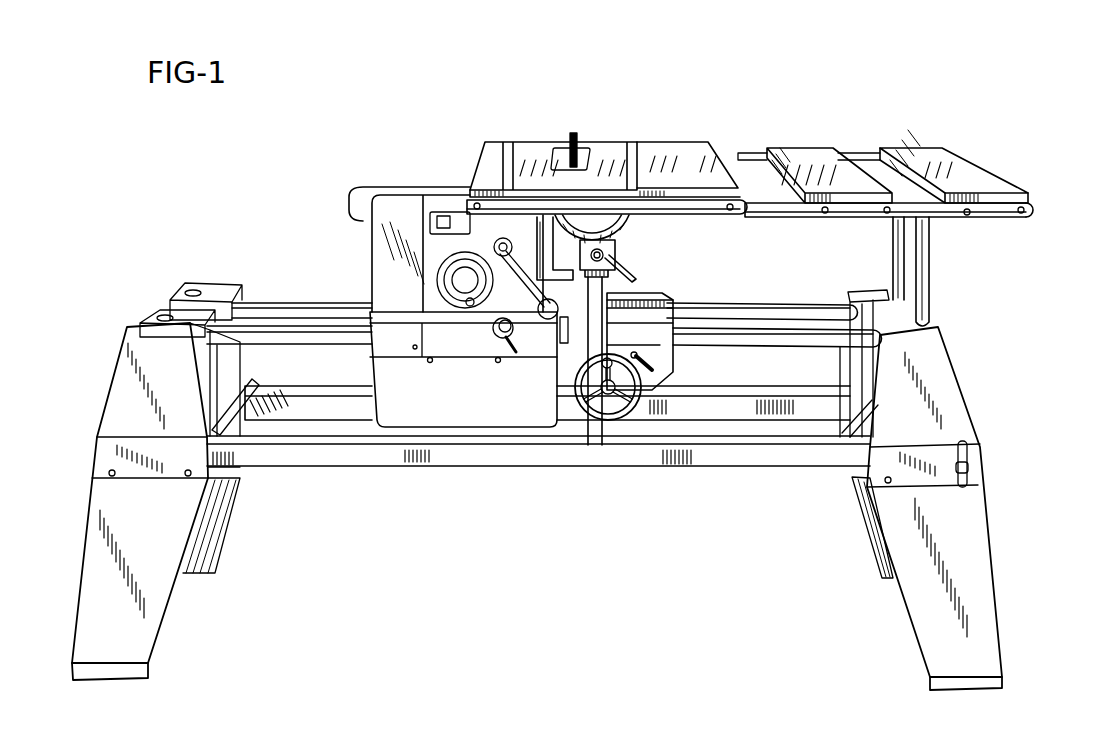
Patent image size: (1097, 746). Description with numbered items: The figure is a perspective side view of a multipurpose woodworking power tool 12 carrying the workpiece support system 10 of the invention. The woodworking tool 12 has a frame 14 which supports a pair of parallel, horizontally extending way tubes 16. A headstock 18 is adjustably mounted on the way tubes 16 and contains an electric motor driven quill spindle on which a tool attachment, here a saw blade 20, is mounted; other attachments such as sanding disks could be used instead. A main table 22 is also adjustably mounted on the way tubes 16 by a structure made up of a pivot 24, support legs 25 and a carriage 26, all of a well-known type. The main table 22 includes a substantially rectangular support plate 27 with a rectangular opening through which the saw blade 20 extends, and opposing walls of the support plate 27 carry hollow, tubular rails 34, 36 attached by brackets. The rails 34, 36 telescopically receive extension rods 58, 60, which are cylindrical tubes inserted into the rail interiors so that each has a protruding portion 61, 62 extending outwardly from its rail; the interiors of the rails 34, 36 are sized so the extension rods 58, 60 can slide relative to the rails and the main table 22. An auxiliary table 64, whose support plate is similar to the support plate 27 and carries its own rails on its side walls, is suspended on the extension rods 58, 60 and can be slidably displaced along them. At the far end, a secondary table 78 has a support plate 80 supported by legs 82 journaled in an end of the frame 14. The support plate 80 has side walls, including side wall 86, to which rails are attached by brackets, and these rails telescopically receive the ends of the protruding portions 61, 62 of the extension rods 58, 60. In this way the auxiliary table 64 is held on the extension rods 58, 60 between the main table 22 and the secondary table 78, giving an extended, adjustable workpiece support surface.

The workpiece support system 10 is at (705, 103).
The multipurpose woodworking tool 12 is at (970, 388).
The frame 14 is at (970, 500).
The way tubes 16 is at (737, 333).
The headstock 18 is at (478, 398).
The saw blade 20 is at (583, 145).
The main table 22 is at (663, 150).
The pivot 24 is at (616, 247).
The support legs 25 is at (607, 288).
The carriage 26 is at (664, 367).
The support plate 27 is at (547, 155).
The rail 34 is at (478, 147).
The rail 36 is at (477, 205).
The extension rod 58 is at (743, 140).
The extension rod 60 is at (787, 217).
The protruding portion 61 is at (750, 150).
The protruding portion 62 is at (762, 218).
The auxiliary table 64 is at (812, 148).
The secondary table 78 is at (915, 157).
The support plate 80 is at (967, 170).
The legs 82 is at (933, 270).
The side wall 86 is at (1030, 197).